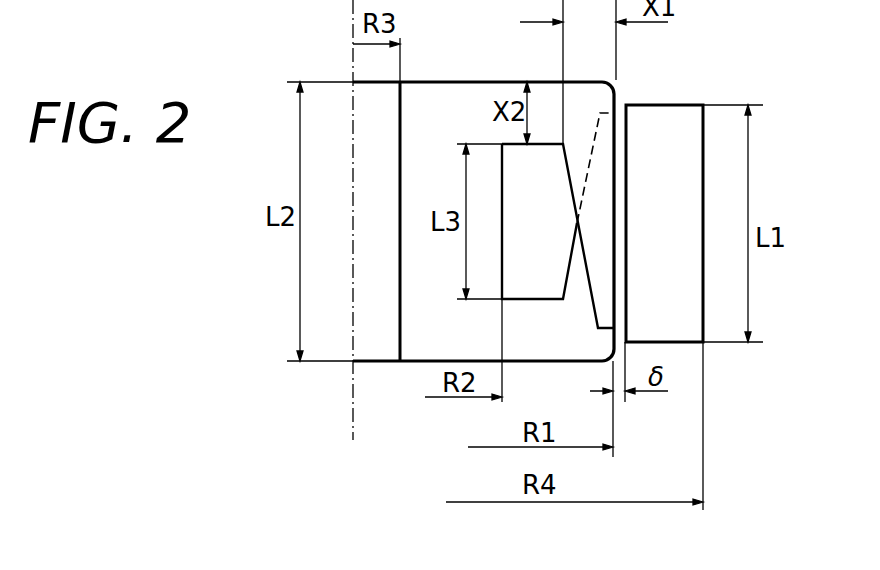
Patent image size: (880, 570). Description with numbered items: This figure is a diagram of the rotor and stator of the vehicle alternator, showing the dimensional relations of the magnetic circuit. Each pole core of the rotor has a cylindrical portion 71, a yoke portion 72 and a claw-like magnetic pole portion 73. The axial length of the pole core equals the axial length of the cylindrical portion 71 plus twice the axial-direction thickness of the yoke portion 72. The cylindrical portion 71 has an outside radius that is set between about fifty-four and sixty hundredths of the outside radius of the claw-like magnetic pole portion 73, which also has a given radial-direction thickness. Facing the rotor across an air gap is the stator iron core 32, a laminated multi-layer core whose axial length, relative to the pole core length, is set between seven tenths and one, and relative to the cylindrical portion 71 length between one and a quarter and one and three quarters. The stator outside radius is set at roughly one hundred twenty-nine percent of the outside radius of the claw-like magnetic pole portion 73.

The cylindrical portion 71 is at (433, 306).
The yoke portion 72 is at (546, 88).
The claw-like magnetic pole portion 73 is at (596, 207).
The stator iron core 32 is at (668, 117).